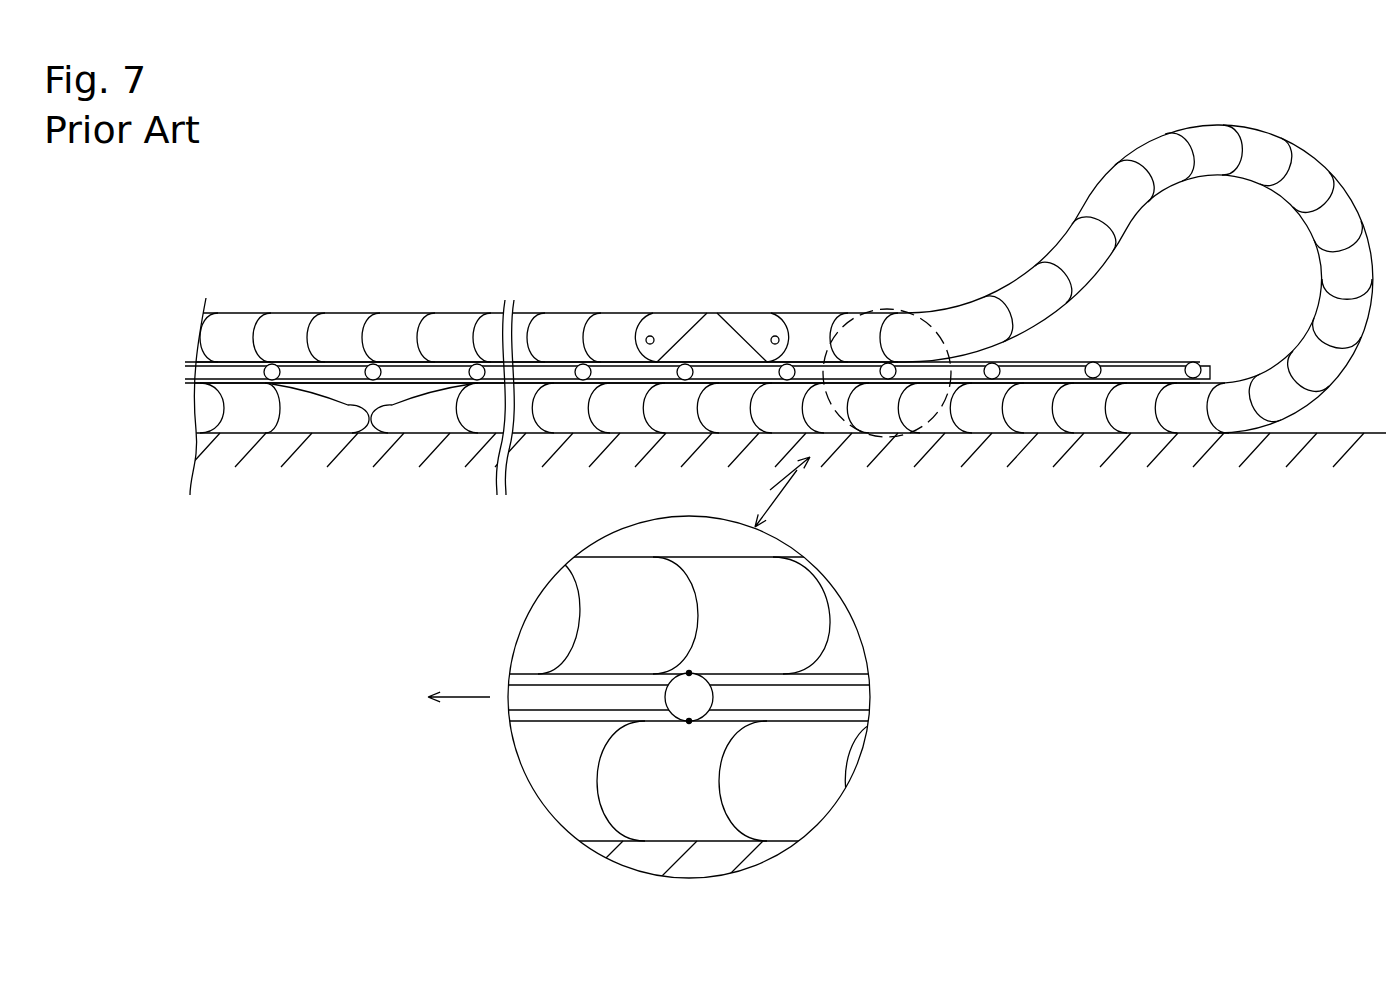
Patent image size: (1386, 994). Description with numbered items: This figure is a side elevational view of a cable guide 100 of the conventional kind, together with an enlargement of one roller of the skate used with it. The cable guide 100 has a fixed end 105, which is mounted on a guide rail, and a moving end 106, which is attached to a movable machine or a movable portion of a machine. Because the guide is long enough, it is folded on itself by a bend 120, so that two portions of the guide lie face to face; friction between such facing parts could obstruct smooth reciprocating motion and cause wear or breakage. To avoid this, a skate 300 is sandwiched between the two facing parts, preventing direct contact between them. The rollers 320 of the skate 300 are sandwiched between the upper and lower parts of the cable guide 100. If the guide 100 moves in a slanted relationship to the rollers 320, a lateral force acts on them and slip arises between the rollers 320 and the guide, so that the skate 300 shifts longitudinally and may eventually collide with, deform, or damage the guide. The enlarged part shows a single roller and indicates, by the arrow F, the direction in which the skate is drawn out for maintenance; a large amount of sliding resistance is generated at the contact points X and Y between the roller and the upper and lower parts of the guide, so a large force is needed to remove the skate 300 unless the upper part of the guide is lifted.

The cable guide 100 is at (1069, 452).
The fixed end 105 is at (393, 418).
The moving end 106 is at (740, 318).
The bend 120 is at (1307, 150).
The skate 300 is at (656, 277).
The rollers 320 is at (890, 361).
The contact point X is at (689, 673).
The contact point Y is at (689, 721).
The arrow F is at (445, 698).